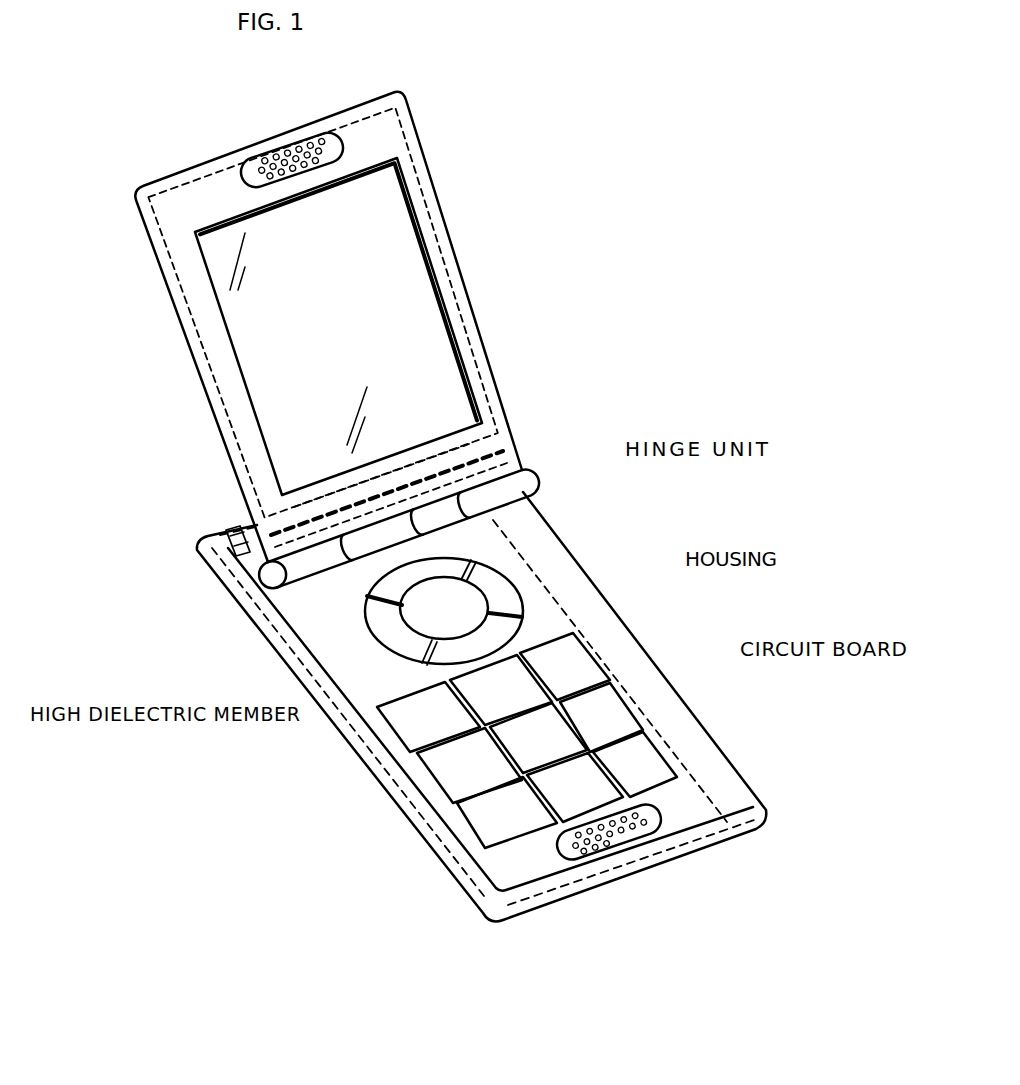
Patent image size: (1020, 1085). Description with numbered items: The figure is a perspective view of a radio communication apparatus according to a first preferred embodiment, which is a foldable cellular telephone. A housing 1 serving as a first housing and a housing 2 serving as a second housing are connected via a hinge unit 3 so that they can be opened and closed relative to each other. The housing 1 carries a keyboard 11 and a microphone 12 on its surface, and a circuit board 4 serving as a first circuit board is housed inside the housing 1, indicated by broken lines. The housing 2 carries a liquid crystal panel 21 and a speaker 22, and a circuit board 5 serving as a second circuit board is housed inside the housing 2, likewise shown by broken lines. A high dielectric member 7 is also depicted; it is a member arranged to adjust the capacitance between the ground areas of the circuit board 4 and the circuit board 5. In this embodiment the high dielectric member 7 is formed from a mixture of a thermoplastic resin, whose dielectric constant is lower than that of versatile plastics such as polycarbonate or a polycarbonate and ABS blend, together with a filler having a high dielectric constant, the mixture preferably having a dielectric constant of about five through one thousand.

The housing 1 is at (590, 573).
The housing 2 is at (473, 303).
The hinge unit 3 is at (527, 481).
The circuit board 4 is at (627, 688).
The circuit board 5 is at (447, 250).
The high dielectric member 7 is at (230, 548).
The keyboard 11 is at (391, 641).
The microphone 12 is at (563, 851).
The liquid crystal panel 21 is at (395, 250).
The speaker 22 is at (284, 160).